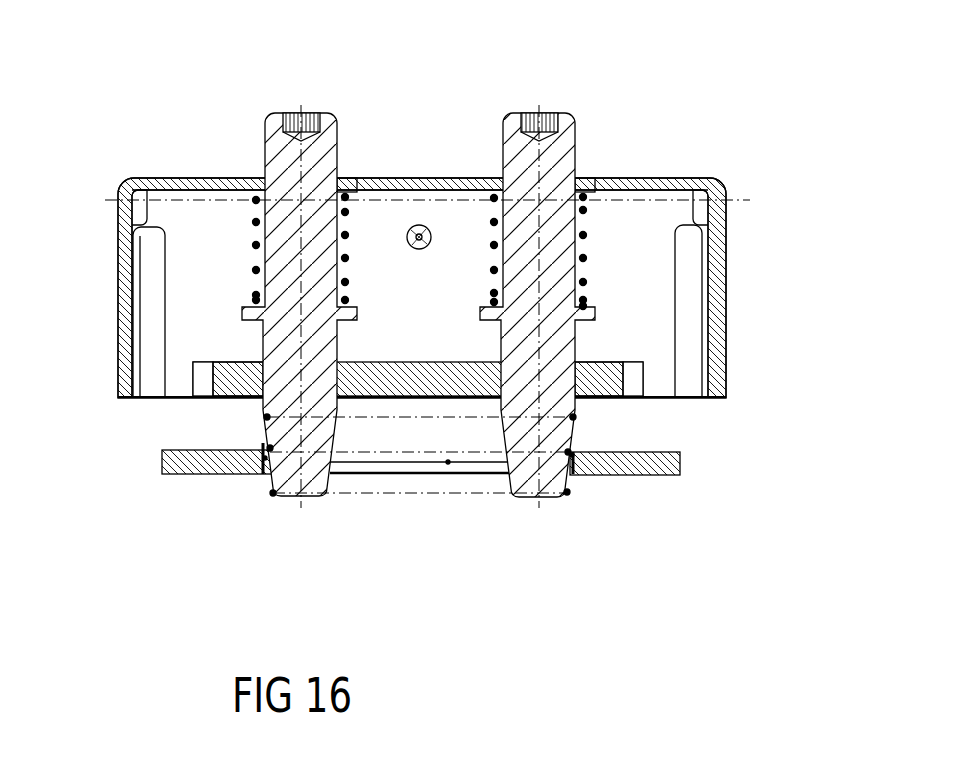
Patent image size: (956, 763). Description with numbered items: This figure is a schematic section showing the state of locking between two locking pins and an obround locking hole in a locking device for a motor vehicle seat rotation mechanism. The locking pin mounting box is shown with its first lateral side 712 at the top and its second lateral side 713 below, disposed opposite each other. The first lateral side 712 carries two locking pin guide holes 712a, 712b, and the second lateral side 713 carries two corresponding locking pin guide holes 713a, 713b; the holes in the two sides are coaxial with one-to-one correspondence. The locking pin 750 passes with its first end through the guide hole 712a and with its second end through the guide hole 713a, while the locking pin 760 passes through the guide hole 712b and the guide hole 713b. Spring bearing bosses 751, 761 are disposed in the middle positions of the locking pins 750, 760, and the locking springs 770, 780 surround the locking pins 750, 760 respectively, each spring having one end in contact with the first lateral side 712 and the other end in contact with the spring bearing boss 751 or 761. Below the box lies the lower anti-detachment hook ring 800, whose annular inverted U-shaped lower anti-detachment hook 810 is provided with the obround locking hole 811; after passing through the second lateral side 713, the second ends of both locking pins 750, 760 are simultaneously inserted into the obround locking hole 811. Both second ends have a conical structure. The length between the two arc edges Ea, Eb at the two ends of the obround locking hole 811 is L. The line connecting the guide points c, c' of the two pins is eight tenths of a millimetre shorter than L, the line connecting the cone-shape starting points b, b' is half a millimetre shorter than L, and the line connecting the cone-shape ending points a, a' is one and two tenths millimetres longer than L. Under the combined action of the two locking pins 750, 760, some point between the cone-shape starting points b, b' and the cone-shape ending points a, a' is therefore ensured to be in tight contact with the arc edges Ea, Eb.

The first lateral side 712 is at (655, 178).
The locking pin guide hole 712a is at (578, 179).
The locking pin guide hole 712b is at (352, 180).
The second lateral side 713 is at (608, 382).
The locking pin guide hole 713a is at (578, 398).
The locking pin guide hole 713b is at (262, 398).
The locking pin 750 is at (540, 130).
The spring bearing boss 751 is at (597, 313).
The locking pin 760 is at (302, 130).
The spring bearing boss 761 is at (243, 313).
The locking spring 770 is at (583, 232).
The locking spring 780 is at (253, 198).
The lower anti-detachment hook ring 800 is at (237, 472).
The lower anti-detachment hook 810 is at (463, 519).
The obround locking hole 811 is at (423, 474).
The cone-shape ending point a is at (514, 381).
The cone-shape ending point a' is at (318, 370).
The cone-shape starting point b is at (502, 368).
The cone-shape starting point b' is at (169, 467).
The guide point c is at (576, 543).
The guide point c' is at (308, 535).
The length between arc edges L is at (448, 462).
The arc edge Ea is at (572, 455).
The arc edge Eb is at (265, 458).